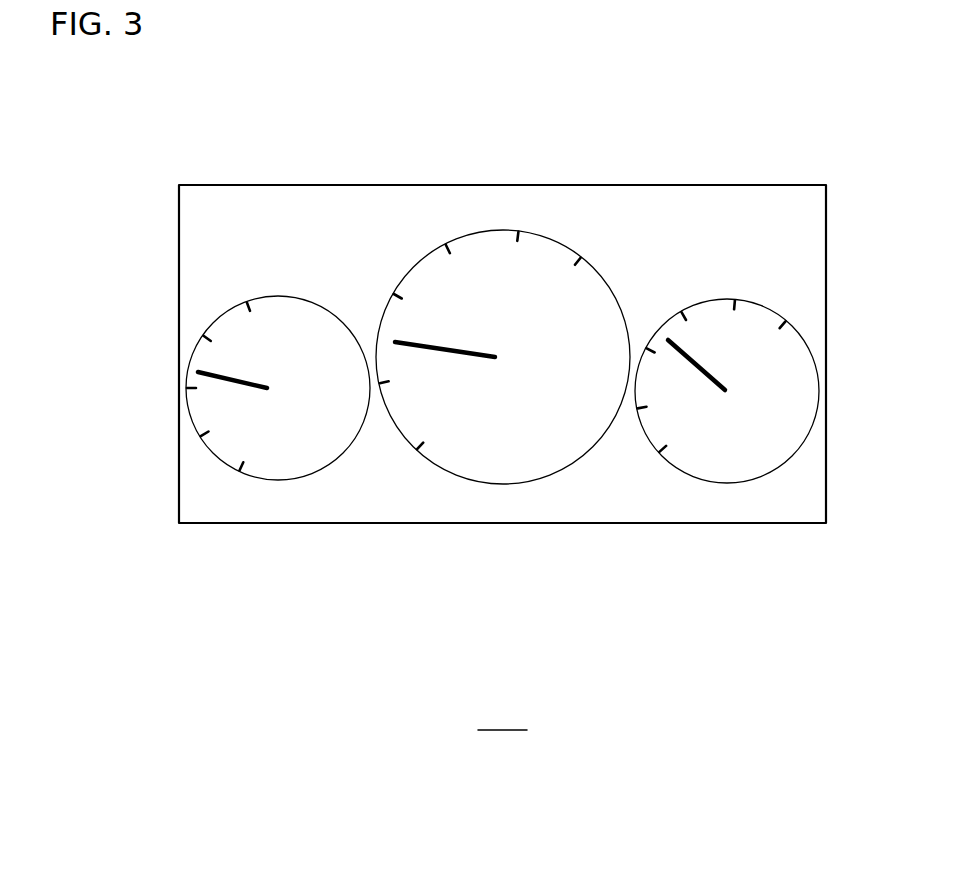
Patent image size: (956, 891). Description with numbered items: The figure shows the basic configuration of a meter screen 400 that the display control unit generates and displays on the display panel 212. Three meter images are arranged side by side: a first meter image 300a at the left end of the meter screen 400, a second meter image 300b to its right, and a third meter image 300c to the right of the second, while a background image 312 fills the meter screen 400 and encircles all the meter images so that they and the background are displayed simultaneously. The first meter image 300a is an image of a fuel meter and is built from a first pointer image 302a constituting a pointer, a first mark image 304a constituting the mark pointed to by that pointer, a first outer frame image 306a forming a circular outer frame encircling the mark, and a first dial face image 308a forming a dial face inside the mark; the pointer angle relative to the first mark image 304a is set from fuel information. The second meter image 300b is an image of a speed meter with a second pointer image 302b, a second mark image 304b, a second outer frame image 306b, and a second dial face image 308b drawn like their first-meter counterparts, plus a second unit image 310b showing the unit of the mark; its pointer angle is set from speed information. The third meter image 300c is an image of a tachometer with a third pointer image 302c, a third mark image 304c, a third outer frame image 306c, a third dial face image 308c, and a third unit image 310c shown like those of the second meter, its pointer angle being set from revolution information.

The display panel 212 is at (473, 416).
The meter screen 400 is at (179, 505).
The background image 312 is at (632, 500).
The first meter image 300a is at (277, 290).
The first pointer image 302a is at (203, 370).
The first mark image 304a is at (223, 337).
The first outer frame image 306a is at (262, 482).
The first dial face image 308a is at (315, 448).
The second meter image 300b is at (502, 225).
The second pointer image 302b is at (448, 345).
The second mark image 304b is at (458, 252).
The second outer frame image 306b is at (461, 480).
The second dial face image 308b is at (515, 442).
The second unit image 310b is at (522, 292).
The third meter image 300c is at (726, 295).
The third pointer image 302c is at (677, 342).
The third mark image 304c is at (691, 314).
The third outer frame image 306c is at (700, 480).
The third dial face image 308c is at (748, 460).
The third unit image 310c is at (747, 343).